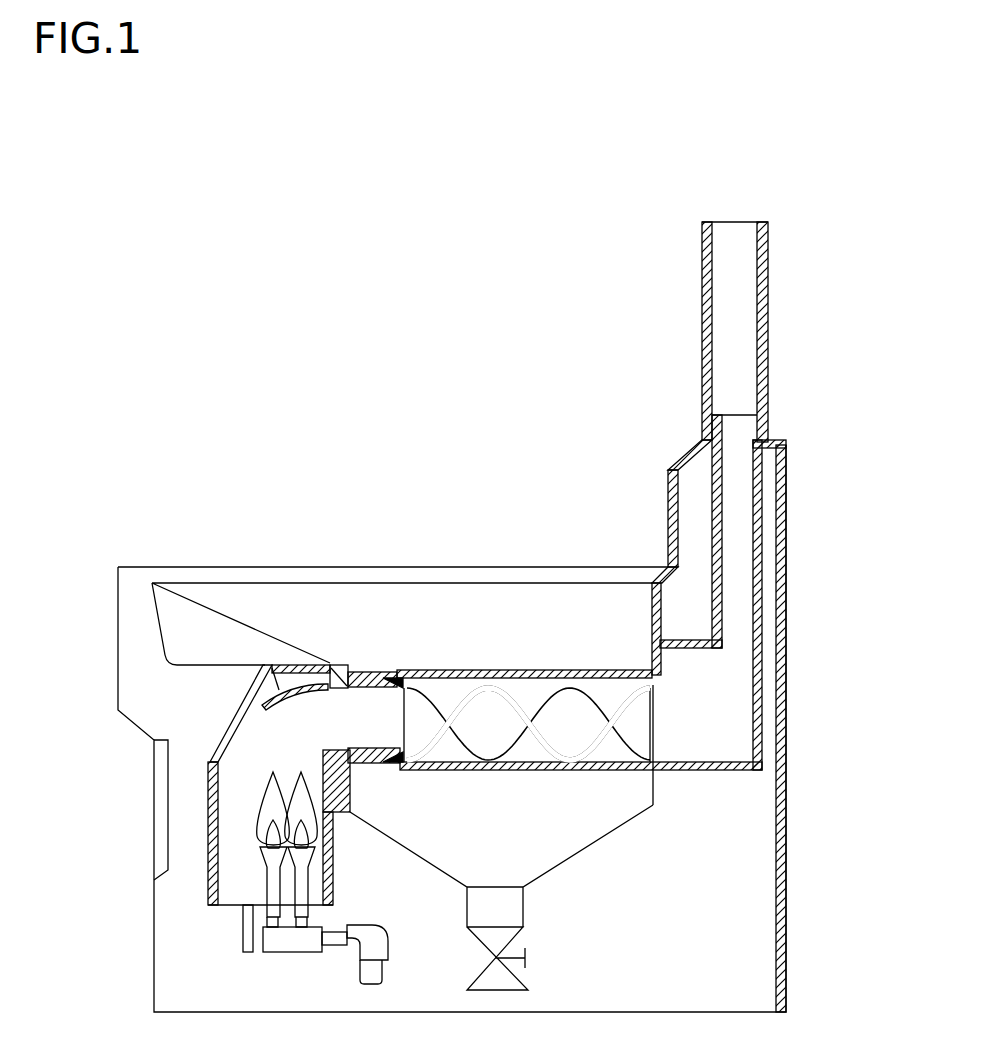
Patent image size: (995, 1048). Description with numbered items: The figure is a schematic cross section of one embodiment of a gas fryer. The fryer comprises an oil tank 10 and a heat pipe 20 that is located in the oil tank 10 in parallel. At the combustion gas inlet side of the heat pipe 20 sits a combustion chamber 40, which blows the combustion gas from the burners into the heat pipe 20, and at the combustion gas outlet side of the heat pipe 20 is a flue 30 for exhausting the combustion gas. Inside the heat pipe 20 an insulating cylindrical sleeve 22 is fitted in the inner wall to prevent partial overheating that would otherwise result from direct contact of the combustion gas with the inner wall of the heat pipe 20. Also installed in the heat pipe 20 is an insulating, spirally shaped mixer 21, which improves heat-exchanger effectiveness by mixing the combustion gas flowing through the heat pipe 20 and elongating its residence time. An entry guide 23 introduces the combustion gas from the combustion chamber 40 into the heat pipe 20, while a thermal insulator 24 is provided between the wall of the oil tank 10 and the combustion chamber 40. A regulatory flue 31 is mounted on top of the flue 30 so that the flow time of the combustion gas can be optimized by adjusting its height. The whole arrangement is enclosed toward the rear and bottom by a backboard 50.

The oil tank 10 is at (462, 605).
The heat pipe 20 is at (601, 668).
The mixer 21 is at (570, 735).
The sleeve 22 is at (372, 673).
The entry guide 23 is at (267, 663).
The thermal insulator 24 is at (327, 750).
The flue 30 is at (740, 546).
The regulatory flue 31 is at (740, 336).
The combustion chamber 40 is at (238, 768).
The backboard 50 is at (786, 820).